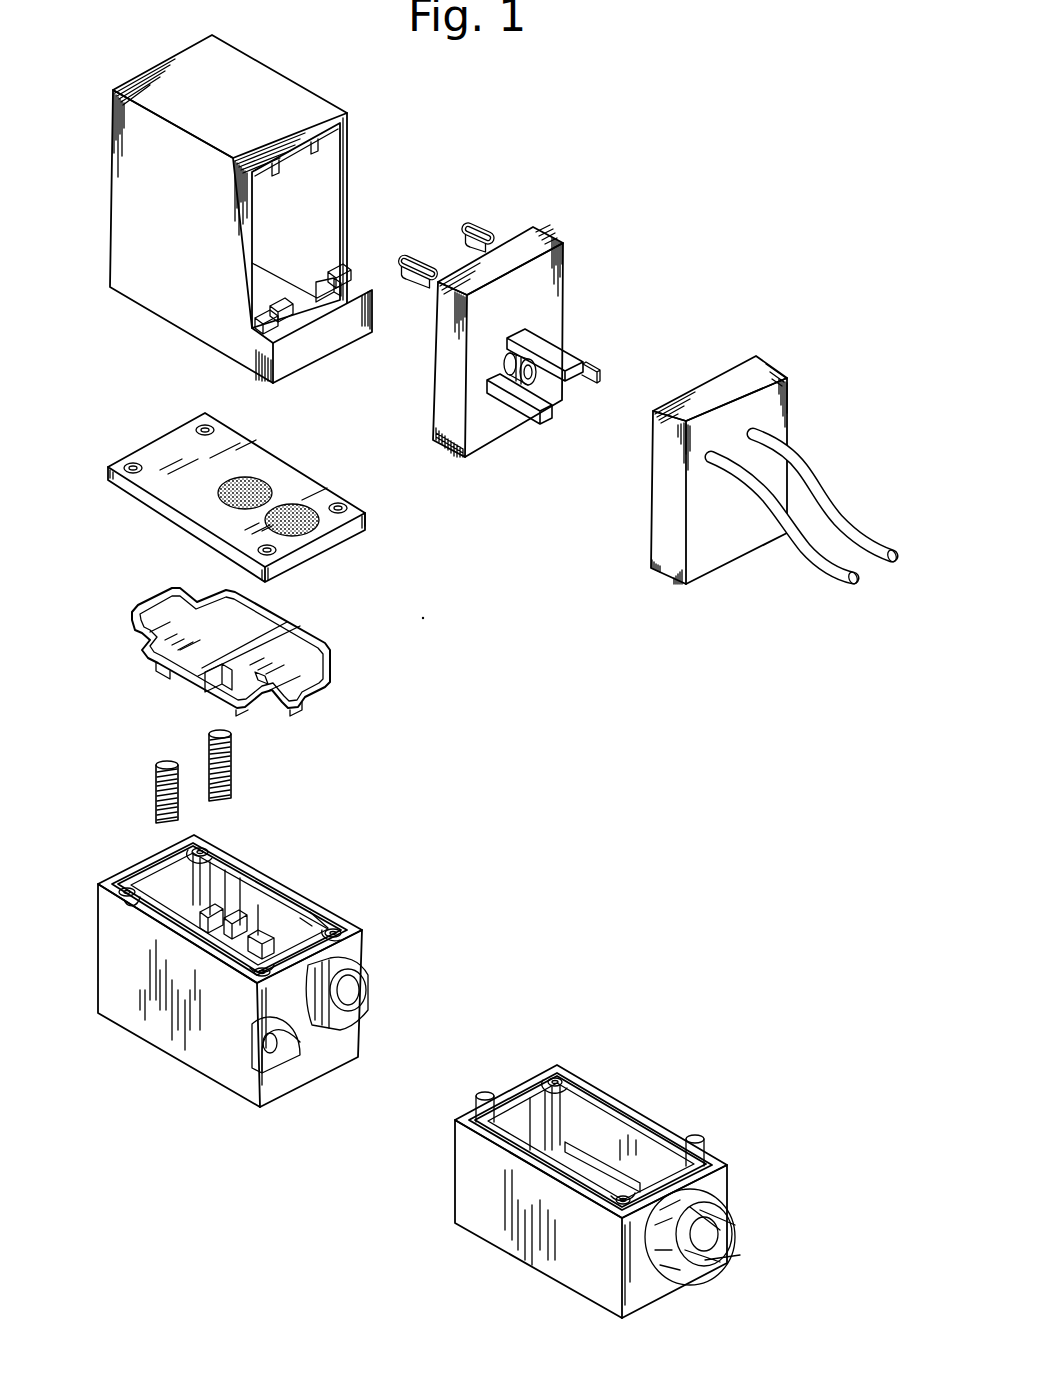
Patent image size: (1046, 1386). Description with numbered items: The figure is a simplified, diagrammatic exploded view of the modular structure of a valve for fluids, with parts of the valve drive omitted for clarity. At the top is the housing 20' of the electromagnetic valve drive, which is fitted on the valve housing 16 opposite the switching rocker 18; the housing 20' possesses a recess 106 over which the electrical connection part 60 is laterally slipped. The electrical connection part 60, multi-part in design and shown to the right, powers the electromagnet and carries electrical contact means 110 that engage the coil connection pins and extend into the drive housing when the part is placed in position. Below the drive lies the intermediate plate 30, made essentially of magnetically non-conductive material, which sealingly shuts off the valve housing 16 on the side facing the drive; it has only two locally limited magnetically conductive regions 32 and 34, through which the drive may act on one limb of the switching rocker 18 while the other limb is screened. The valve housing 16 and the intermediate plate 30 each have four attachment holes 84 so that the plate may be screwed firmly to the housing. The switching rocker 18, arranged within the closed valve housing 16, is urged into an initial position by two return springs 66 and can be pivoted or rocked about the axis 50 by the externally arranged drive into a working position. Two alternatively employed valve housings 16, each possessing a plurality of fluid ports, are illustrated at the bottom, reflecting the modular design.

The housing of the electromagnetic valve drive 20' is at (213, 209).
The recess 106 is at (333, 172).
The electrical contact means 110 is at (476, 228).
The electrical connection part 60 is at (565, 212).
The intermediate plate 30 is at (162, 458).
The magnetically conductive region 32 is at (260, 480).
The magnetically conductive region 34 is at (303, 513).
The attachment holes 84 is at (347, 503).
The switching rocker 18 is at (178, 618).
The axis 50 is at (280, 625).
The return springs 66 is at (208, 748).
The valve housing 16 is at (473, 1167).